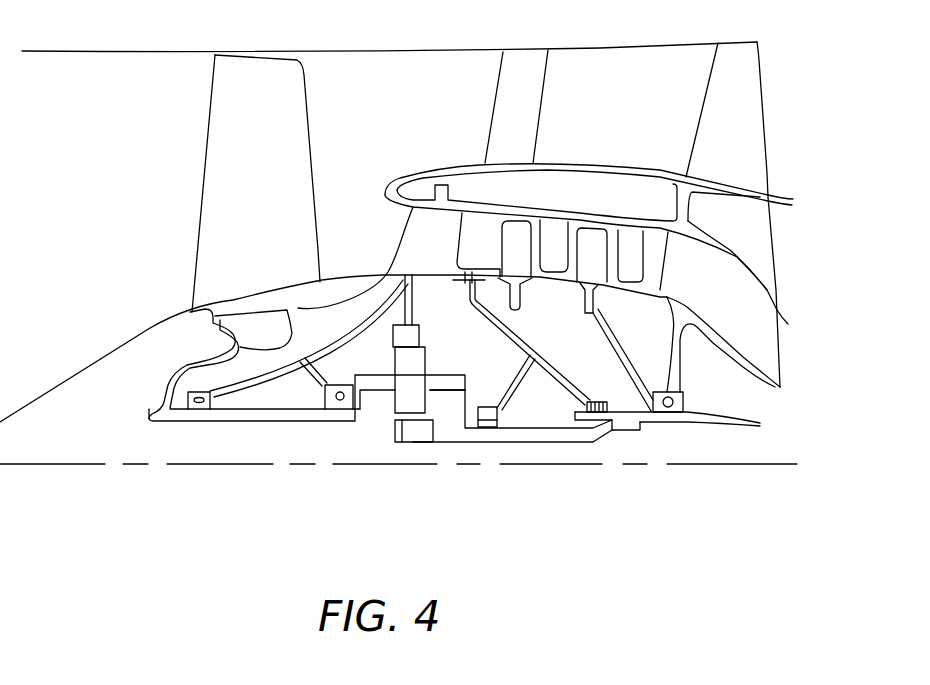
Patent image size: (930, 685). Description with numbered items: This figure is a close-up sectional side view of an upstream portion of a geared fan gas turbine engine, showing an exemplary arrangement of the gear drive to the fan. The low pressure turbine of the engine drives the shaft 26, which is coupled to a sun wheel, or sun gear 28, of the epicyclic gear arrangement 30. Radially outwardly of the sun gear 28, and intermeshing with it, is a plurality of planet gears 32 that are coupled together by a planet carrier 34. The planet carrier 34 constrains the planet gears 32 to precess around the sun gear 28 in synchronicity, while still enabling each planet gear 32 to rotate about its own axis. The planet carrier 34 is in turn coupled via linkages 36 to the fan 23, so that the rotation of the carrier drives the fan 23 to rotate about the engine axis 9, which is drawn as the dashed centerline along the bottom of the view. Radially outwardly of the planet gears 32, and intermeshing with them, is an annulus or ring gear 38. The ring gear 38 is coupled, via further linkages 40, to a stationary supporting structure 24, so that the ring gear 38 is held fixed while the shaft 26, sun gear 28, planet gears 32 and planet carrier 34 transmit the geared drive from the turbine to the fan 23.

The engine axis 9 is at (85, 464).
The fan 23 is at (215, 165).
The stationary supporting structure 24 is at (417, 242).
The shaft 26 is at (657, 423).
The sun gear 28 is at (415, 433).
The epicyclic gear arrangement 30 is at (400, 403).
The planet gears 32 is at (400, 415).
The planet carrier 34 is at (463, 400).
The linkages 36 is at (380, 400).
The ring gear 38 is at (190, 312).
The linkages 40 is at (298, 308).